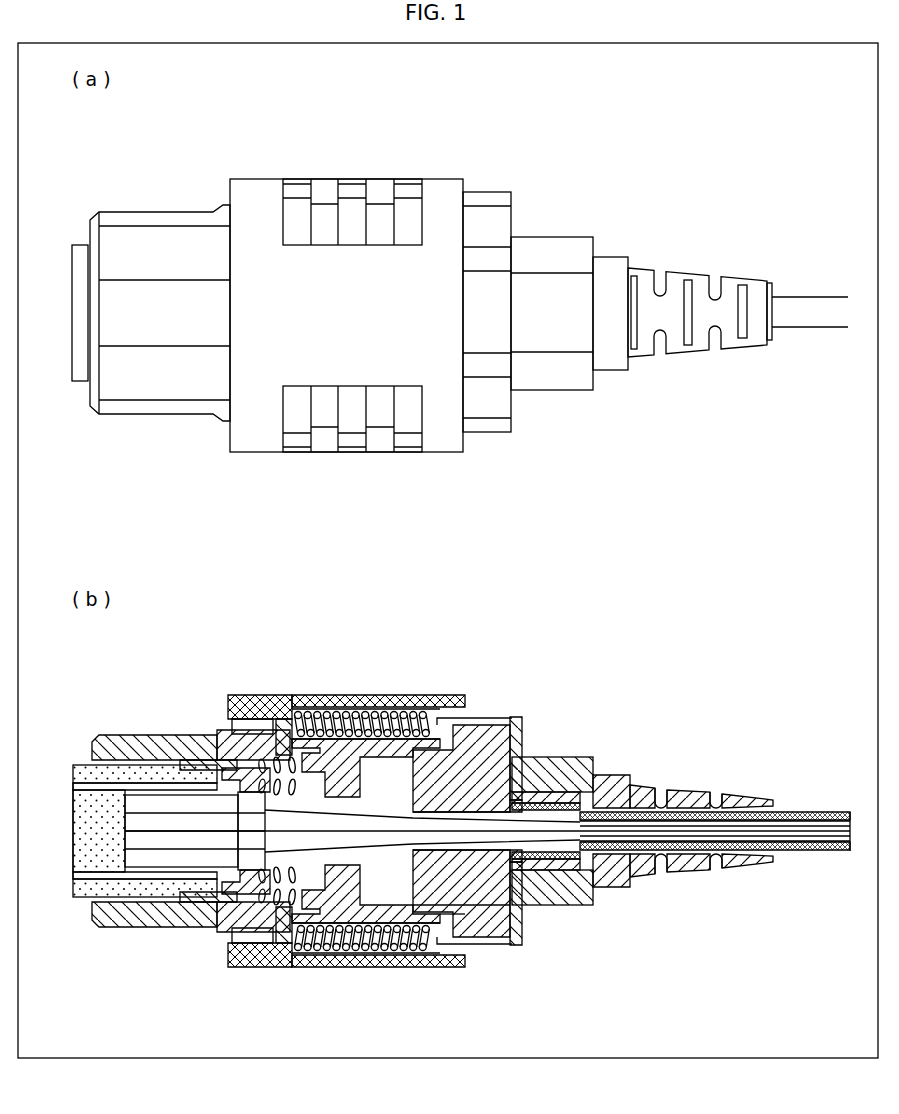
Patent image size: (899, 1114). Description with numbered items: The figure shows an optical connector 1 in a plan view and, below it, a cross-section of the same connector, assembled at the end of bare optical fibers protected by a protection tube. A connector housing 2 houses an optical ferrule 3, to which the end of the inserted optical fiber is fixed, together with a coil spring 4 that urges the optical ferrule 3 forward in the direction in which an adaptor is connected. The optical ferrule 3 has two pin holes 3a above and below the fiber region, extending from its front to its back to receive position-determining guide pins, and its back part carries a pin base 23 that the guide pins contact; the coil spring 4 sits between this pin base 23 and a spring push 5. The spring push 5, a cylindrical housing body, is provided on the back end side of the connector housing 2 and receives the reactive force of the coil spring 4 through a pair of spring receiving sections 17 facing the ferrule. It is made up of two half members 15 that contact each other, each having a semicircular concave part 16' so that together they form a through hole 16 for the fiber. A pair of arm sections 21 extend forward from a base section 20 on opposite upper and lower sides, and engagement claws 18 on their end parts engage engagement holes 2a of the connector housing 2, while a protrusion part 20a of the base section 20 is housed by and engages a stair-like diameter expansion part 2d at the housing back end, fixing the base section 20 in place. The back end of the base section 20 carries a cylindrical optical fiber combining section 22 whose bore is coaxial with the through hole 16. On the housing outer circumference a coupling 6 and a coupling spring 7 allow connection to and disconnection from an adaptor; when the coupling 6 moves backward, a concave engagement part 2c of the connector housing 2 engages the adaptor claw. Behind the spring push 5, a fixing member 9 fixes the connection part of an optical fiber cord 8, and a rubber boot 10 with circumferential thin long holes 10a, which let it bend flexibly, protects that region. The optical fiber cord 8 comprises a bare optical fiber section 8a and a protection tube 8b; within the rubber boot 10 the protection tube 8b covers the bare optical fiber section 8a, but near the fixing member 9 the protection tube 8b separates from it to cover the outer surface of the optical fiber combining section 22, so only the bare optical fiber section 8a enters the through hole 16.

The optical connector 1 is at (641, 131).
The connector housing 2 is at (150, 250).
The engagement holes 2a is at (308, 928).
The concave engagement part 2c is at (245, 745).
The stair-like diameter expansion part 2d is at (452, 925).
The optical ferrule 3 is at (75, 260).
The pin holes 3a is at (74, 781).
The coil spring 4 is at (281, 730).
The spring push 5 is at (522, 661).
The coupling 6 is at (441, 212).
The coupling spring 7 is at (372, 697).
The optical fiber cord 8 is at (817, 305).
The bare optical fiber section 8a is at (570, 880).
The protection tube 8b is at (569, 790).
The fixing member 9 is at (552, 247).
The rubber boot 10 is at (772, 250).
The thin long holes 10a is at (715, 800).
The half members 15 is at (473, 755).
The through hole 16 is at (552, 908).
The semicircular concave part 16' is at (528, 833).
The spring receiving sections 17 is at (303, 752).
The engagement claws 18 is at (281, 950).
The base section 20 is at (432, 775).
The protrusion part 20a is at (482, 920).
The arm sections 21 is at (343, 775).
The optical fiber combining section 22 is at (541, 790).
The pin base 23 is at (176, 764).